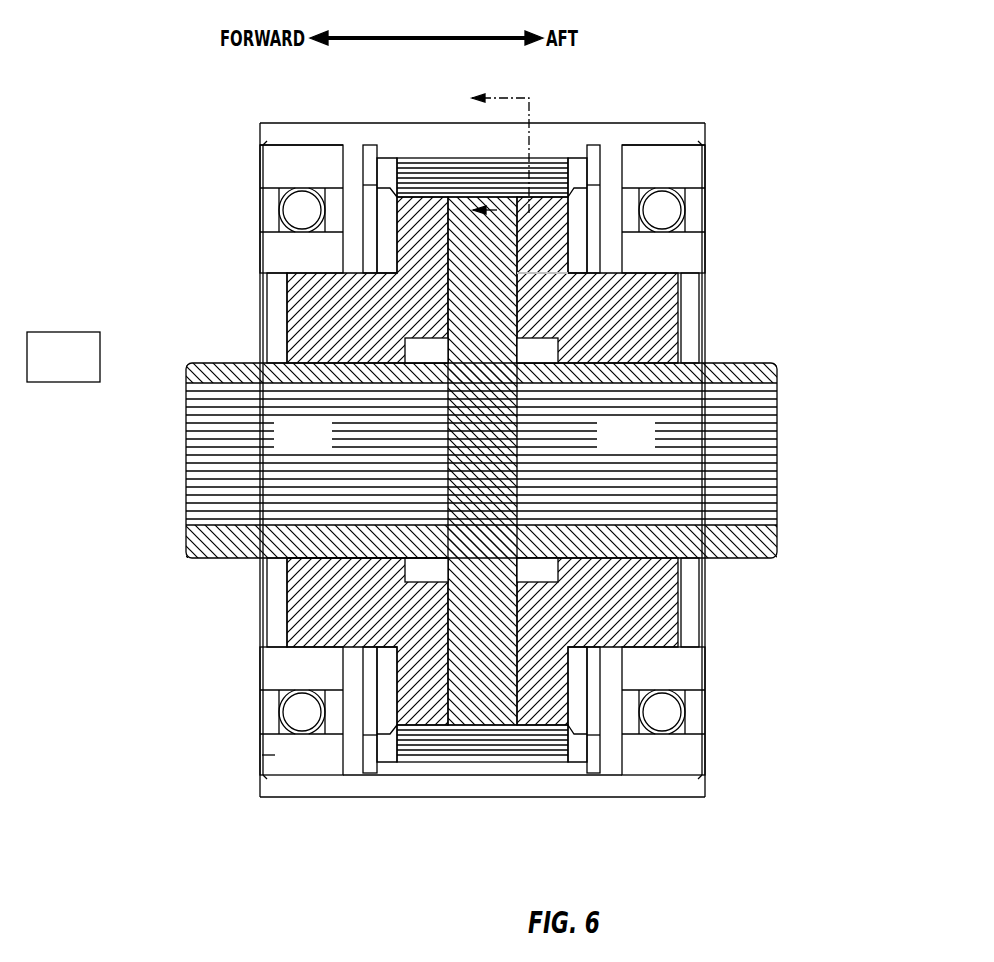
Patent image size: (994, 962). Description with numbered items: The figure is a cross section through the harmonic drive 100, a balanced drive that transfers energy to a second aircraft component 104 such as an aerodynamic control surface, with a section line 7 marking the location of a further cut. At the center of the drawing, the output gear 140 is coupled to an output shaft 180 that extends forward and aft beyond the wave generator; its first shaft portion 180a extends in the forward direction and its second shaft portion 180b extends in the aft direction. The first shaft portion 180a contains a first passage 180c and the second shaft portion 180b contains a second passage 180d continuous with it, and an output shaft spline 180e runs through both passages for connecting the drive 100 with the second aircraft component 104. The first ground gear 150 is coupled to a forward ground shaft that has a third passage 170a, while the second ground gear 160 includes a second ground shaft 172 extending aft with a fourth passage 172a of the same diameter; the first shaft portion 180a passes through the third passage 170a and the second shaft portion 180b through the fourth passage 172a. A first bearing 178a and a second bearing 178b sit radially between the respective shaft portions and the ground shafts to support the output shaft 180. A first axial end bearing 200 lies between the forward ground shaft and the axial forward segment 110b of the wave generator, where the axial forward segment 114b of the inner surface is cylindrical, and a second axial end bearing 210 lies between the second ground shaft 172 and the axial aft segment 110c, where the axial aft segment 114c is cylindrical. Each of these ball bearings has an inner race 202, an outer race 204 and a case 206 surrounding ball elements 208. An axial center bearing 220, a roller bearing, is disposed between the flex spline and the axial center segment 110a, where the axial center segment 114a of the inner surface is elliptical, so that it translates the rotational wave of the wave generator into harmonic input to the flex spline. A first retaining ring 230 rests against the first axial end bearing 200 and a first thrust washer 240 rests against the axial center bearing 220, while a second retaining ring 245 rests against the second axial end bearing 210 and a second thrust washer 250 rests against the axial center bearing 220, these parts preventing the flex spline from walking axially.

The drive 100 is at (136, 80).
The second aircraft component 104 is at (177, 397).
The section line 7- 7 is at (500, 154).
The axial center segment of the wave generator 110a is at (552, 797).
The axial forward segment of the wave generator 110b is at (310, 798).
The axial aft segment of the wave generator 110c is at (662, 797).
The axial center segment of the inner surface 114a is at (450, 777).
The axial forward segment of the inner surface 114b is at (292, 788).
The axial aft segment of the inner surface 114c is at (682, 787).
The output gear 140 is at (463, 223).
The first ground gear 150 is at (412, 247).
The second ground gear 160 is at (547, 208).
The third passage 170a is at (305, 562).
The second ground shaft 172 is at (660, 318).
The fourth passage 172a is at (597, 568).
The first bearing 178a is at (420, 353).
The second bearing 178b is at (543, 347).
The output shaft 180 is at (480, 457).
The first shaft portion 180a is at (327, 577).
The second shaft portion 180b is at (737, 538).
The first passage 180c is at (325, 444).
The second passage 180d is at (648, 444).
The output shaft spline 180e is at (760, 493).
The first axial end bearing 200 is at (238, 747).
The inner race 202 is at (280, 675).
The outer race 204 is at (277, 737).
The case 206 is at (273, 758).
The ball elements 208 is at (292, 710).
The second axial end bearing 210 is at (675, 658).
The axial center bearing 220 is at (465, 747).
The first retaining ring 230 is at (380, 780).
The first thrust washer 240 is at (400, 762).
The second retaining ring 245 is at (590, 705).
The second thrust washer 250 is at (592, 767).